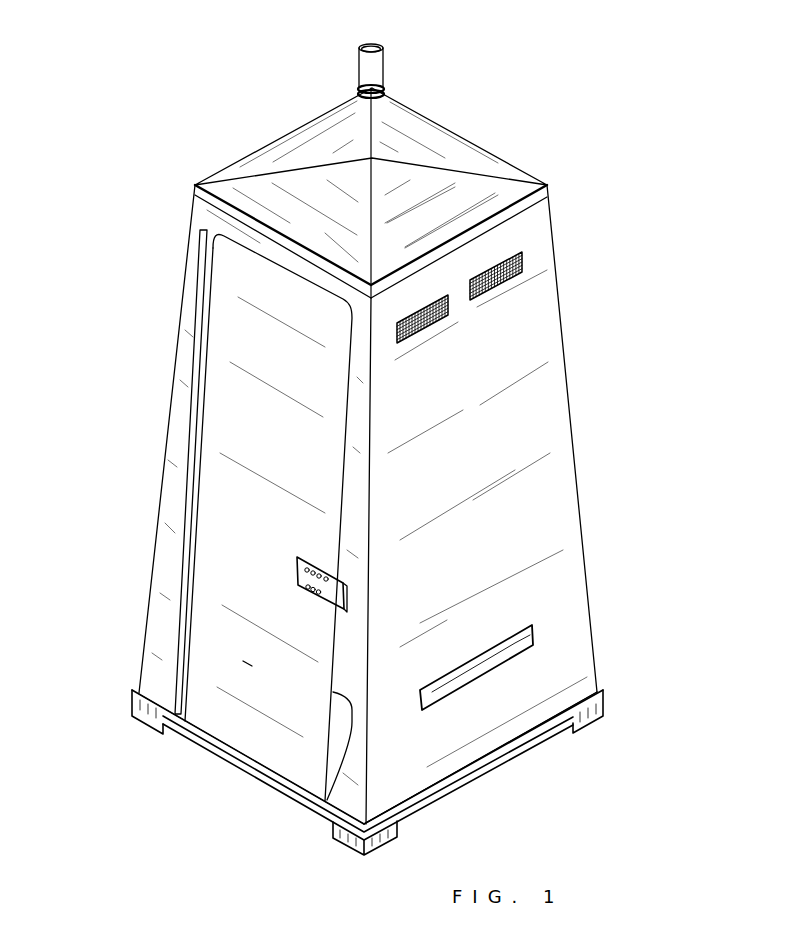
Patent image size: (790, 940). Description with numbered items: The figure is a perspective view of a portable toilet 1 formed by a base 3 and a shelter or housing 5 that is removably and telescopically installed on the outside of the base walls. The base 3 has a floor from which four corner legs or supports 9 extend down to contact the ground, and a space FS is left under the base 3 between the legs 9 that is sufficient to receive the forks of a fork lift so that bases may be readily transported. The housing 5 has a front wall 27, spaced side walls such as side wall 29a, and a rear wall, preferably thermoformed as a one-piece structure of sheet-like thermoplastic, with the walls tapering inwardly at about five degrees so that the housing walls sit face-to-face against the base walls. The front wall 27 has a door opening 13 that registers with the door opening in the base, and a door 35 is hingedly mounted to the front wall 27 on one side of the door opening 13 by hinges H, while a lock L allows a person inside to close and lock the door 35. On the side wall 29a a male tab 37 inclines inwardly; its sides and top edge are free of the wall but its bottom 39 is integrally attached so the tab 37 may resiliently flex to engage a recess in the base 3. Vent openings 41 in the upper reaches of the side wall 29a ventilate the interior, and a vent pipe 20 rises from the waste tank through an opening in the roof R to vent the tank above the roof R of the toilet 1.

The portable toilet 1 is at (584, 276).
The roof R is at (427, 130).
The vent pipe 20 is at (385, 63).
The shelter or housing 5 is at (583, 509).
The side wall 29a is at (526, 424).
The vent openings 41 is at (496, 262).
The front wall 27 is at (174, 551).
The hinges H is at (196, 426).
The door opening 13 is at (333, 692).
The lock L is at (323, 602).
The door 35 is at (247, 663).
The male tab 37 is at (519, 641).
The bottom of tab 39 is at (510, 660).
The base 3 is at (519, 765).
The fork space FS is at (293, 803).
The corner legs or supports 9 is at (148, 723).